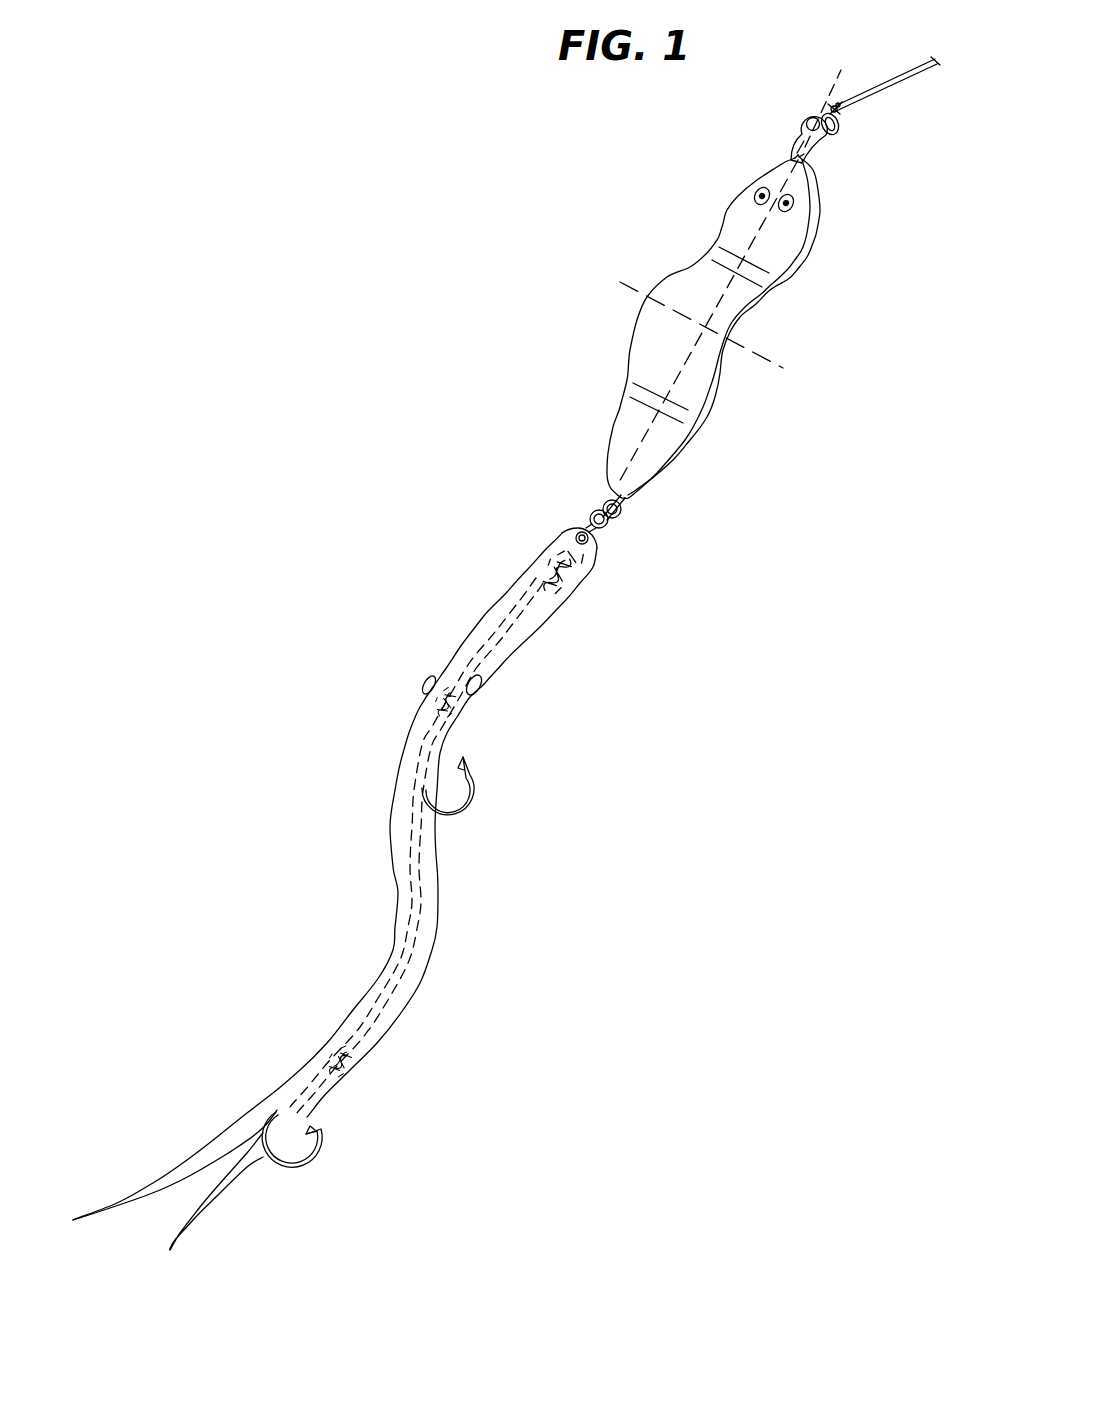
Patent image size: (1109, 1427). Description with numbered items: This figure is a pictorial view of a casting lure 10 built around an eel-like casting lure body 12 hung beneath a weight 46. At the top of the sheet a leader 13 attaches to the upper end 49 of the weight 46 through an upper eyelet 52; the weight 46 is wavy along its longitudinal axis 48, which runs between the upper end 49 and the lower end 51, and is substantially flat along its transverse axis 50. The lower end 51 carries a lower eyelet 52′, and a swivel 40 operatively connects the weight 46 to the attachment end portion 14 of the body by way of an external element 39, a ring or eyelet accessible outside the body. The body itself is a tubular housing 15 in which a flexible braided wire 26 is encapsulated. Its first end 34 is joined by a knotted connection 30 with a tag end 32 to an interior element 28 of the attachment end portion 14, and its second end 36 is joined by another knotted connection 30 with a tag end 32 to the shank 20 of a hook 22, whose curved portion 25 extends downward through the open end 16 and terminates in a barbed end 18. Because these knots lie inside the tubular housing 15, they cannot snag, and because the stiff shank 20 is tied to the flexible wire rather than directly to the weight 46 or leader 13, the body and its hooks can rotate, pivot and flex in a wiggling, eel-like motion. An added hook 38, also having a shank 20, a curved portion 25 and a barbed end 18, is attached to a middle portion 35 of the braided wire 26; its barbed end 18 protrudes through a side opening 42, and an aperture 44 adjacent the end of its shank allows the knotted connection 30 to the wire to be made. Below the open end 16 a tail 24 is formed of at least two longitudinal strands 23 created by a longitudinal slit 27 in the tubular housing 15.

The casting lure 10 is at (441, 365).
The casting lure body 12 is at (470, 604).
The leader 13 is at (920, 78).
The attachment end portion 14 is at (586, 531).
The tubular housing 15 is at (518, 645).
The open end 16 is at (280, 1085).
The barbed end 18 is at (464, 758).
The shank 20 is at (420, 742).
The hook 22 is at (322, 1146).
The longitudinal strands 23 is at (172, 1245).
The tail 24 is at (168, 1154).
The curved portion 25 is at (458, 813).
The braided wire 26 is at (422, 923).
The longitudinal slit 27 is at (227, 1155).
The interior element 28 is at (572, 537).
The knotted connection 30 is at (550, 566).
The tag end 32 is at (568, 590).
The first end 34 is at (548, 610).
The middle portion 35 is at (492, 687).
The second end 36 is at (370, 1055).
The added hook 38 is at (474, 797).
The external element 39 is at (618, 521).
The swivel 40 is at (590, 537).
The side opening 42 is at (425, 797).
The aperture 44 is at (428, 686).
The weight 46 is at (797, 253).
The longitudinal axis 48 is at (828, 80).
The upper end 49 is at (820, 159).
The transverse axis 50 is at (775, 364).
The lower end 51 is at (597, 518).
The upper eyelet 52 is at (816, 142).
The lower eyelet 52′ is at (585, 496).